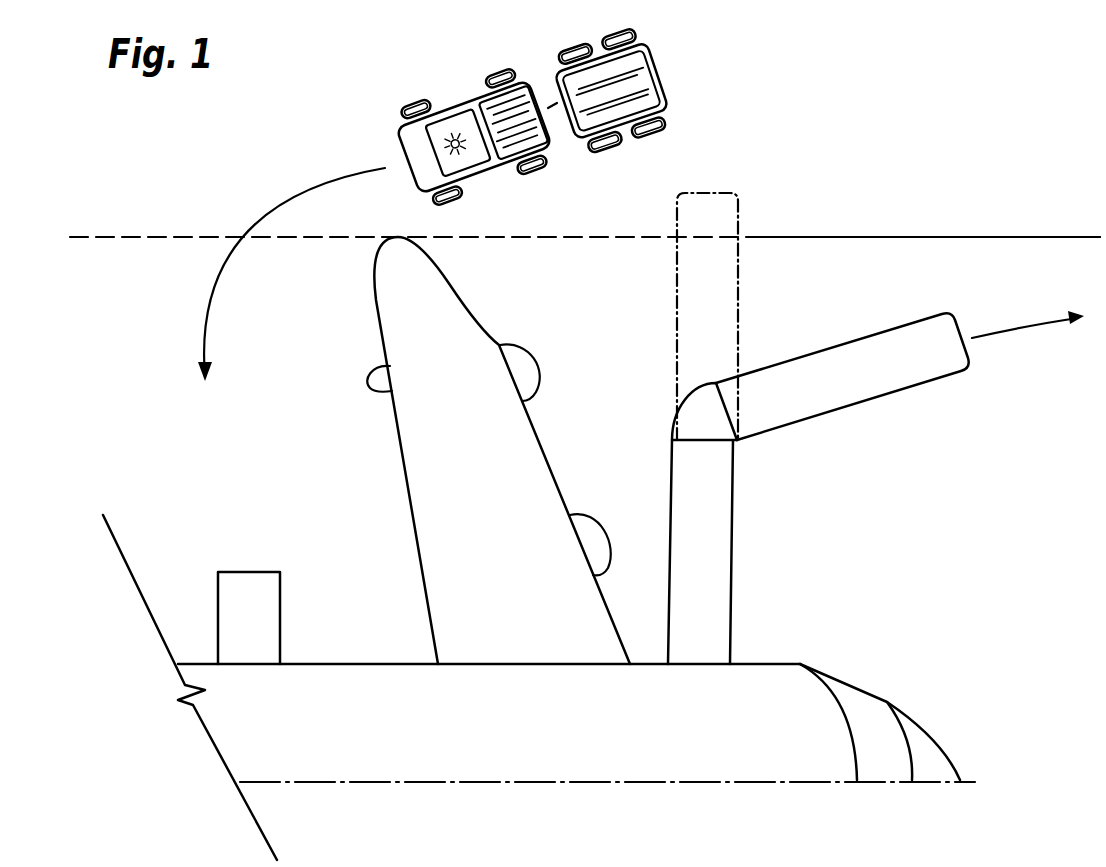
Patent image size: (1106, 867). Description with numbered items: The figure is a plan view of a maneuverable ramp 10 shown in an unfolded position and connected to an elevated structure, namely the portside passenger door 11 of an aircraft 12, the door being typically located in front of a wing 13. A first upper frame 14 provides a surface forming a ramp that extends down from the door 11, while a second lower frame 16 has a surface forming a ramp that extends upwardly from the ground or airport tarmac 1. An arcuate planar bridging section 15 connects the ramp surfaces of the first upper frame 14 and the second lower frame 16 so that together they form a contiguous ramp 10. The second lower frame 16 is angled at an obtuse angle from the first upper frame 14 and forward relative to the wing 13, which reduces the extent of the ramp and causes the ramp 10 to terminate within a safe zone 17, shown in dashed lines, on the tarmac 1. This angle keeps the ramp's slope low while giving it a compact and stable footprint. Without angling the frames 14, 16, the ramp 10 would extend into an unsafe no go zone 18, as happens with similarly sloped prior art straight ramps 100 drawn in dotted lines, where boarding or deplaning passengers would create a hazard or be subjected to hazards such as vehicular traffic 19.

The airport tarmac 1 is at (1018, 141).
The maneuverable ramp 10 is at (818, 488).
The passenger door 11 is at (695, 664).
The aircraft 12 is at (579, 748).
The wing 13 is at (464, 524).
The first upper frame 14 is at (687, 587).
The arcuate planar bridging section 15 is at (686, 431).
The second lower frame 16 is at (859, 380).
The safe zone 17 is at (1058, 357).
The no go zone 18 is at (802, 136).
The vehicular traffic 19 is at (662, 68).
The prior art straight ramp 100 is at (672, 270).